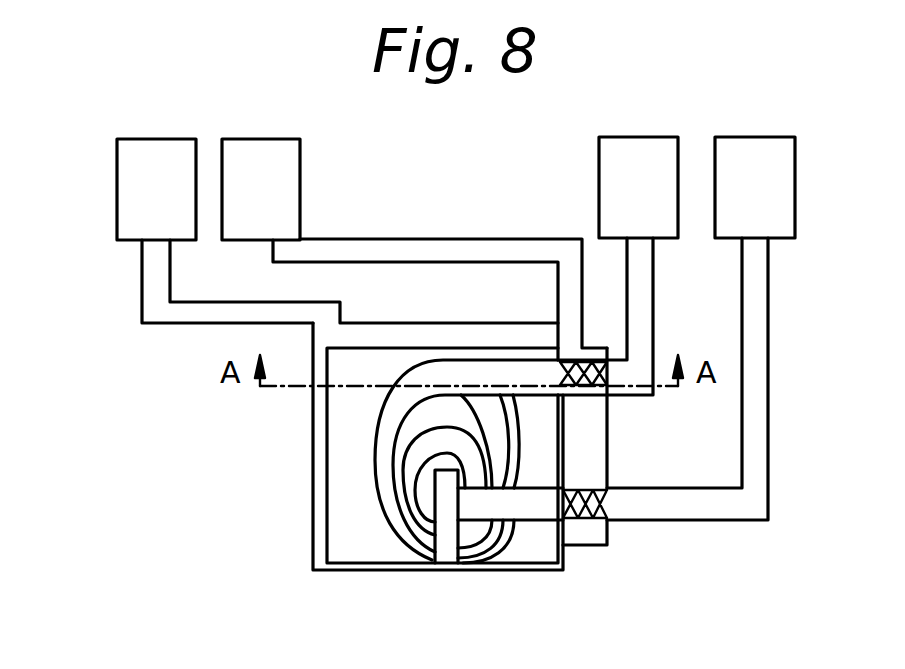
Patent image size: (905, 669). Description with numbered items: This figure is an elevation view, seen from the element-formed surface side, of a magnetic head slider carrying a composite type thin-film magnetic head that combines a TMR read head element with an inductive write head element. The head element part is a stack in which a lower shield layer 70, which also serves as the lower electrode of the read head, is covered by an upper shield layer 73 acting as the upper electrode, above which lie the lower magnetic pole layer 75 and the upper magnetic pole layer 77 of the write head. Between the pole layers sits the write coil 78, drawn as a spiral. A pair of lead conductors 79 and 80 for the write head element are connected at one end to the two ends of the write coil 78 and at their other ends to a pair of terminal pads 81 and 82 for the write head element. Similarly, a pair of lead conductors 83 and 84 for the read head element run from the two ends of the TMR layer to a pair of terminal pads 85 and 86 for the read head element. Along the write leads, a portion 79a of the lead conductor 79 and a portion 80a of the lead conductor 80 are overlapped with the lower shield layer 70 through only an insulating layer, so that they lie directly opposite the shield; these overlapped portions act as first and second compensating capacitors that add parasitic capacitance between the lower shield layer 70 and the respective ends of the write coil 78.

The lower shield layer 70 is at (598, 454).
The upper shield layer 73 is at (433, 335).
The lower magnetic pole layer 75 is at (533, 543).
The upper magnetic pole layer 77 is at (443, 537).
The write coil 78 is at (395, 457).
The lead conductor for the write head element 79 is at (642, 300).
The portion of the lead conductor 79a is at (593, 393).
The lead conductor for the write head element 80 is at (760, 332).
The portion of the lead conductor 80a is at (607, 510).
The terminal pad for the write head element 81 is at (623, 180).
The terminal pad for the write head element 82 is at (773, 180).
The lead conductor for the read head element 83 is at (382, 247).
The lead conductor for the read head element 84 is at (173, 312).
The terminal pad for the read head element 85 is at (282, 170).
The terminal pad for the read head element 86 is at (118, 172).